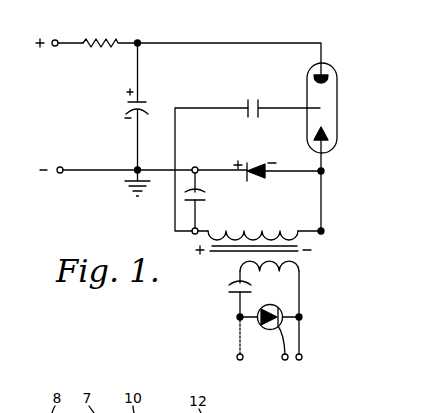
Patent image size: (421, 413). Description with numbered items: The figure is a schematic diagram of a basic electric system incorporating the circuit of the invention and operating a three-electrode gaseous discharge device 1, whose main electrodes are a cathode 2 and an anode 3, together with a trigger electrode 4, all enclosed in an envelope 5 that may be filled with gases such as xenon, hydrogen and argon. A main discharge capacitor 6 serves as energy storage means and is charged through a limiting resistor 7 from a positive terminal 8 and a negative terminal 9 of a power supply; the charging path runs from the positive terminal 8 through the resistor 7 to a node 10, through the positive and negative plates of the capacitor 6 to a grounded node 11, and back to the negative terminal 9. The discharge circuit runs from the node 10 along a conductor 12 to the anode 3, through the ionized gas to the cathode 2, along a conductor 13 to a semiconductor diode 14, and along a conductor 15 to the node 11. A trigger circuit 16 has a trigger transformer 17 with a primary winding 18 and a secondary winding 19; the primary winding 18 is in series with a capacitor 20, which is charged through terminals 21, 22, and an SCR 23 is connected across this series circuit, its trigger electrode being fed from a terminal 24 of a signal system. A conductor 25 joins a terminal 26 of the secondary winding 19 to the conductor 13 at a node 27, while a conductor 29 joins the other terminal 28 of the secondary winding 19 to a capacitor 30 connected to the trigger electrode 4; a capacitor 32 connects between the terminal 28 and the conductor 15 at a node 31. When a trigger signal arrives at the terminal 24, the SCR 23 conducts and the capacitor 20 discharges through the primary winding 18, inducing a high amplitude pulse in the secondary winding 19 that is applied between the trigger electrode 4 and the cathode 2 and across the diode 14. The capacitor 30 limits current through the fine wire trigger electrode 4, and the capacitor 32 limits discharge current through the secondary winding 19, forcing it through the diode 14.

The gaseous discharge device 1 is at (333, 115).
The cathode 2 is at (325, 133).
The anode 3 is at (327, 79).
The trigger electrode 4 is at (320, 106).
The envelope 5 is at (328, 151).
The main discharge capacitor 6 is at (125, 107).
The limiting resistor 7 is at (103, 38).
The positive terminal 8 is at (55, 40).
The negative terminal 9 is at (58, 166).
The node 10 is at (137, 40).
The node 11 is at (134, 166).
The conductor 12 is at (257, 41).
The conductor 13 is at (324, 165).
The semiconductor diode 14 is at (259, 166).
The conductor 15 is at (160, 168).
The trigger circuit 16 is at (215, 335).
The trigger transformer 17 is at (300, 254).
The primary winding 18 is at (272, 267).
The secondary winding 19 is at (263, 229).
The capacitor 20 is at (233, 292).
The terminal 21 is at (236, 357).
The terminal 22 is at (302, 357).
The SCR 23 is at (290, 313).
The terminal 24 is at (282, 357).
The conductor 25 is at (334, 201).
The terminal 26 is at (324, 232).
The node 27 is at (317, 168).
The terminal 28 is at (192, 232).
The conductor 29 is at (209, 107).
The capacitor 30 is at (262, 103).
The node 31 is at (193, 167).
The capacitor 32 is at (207, 194).